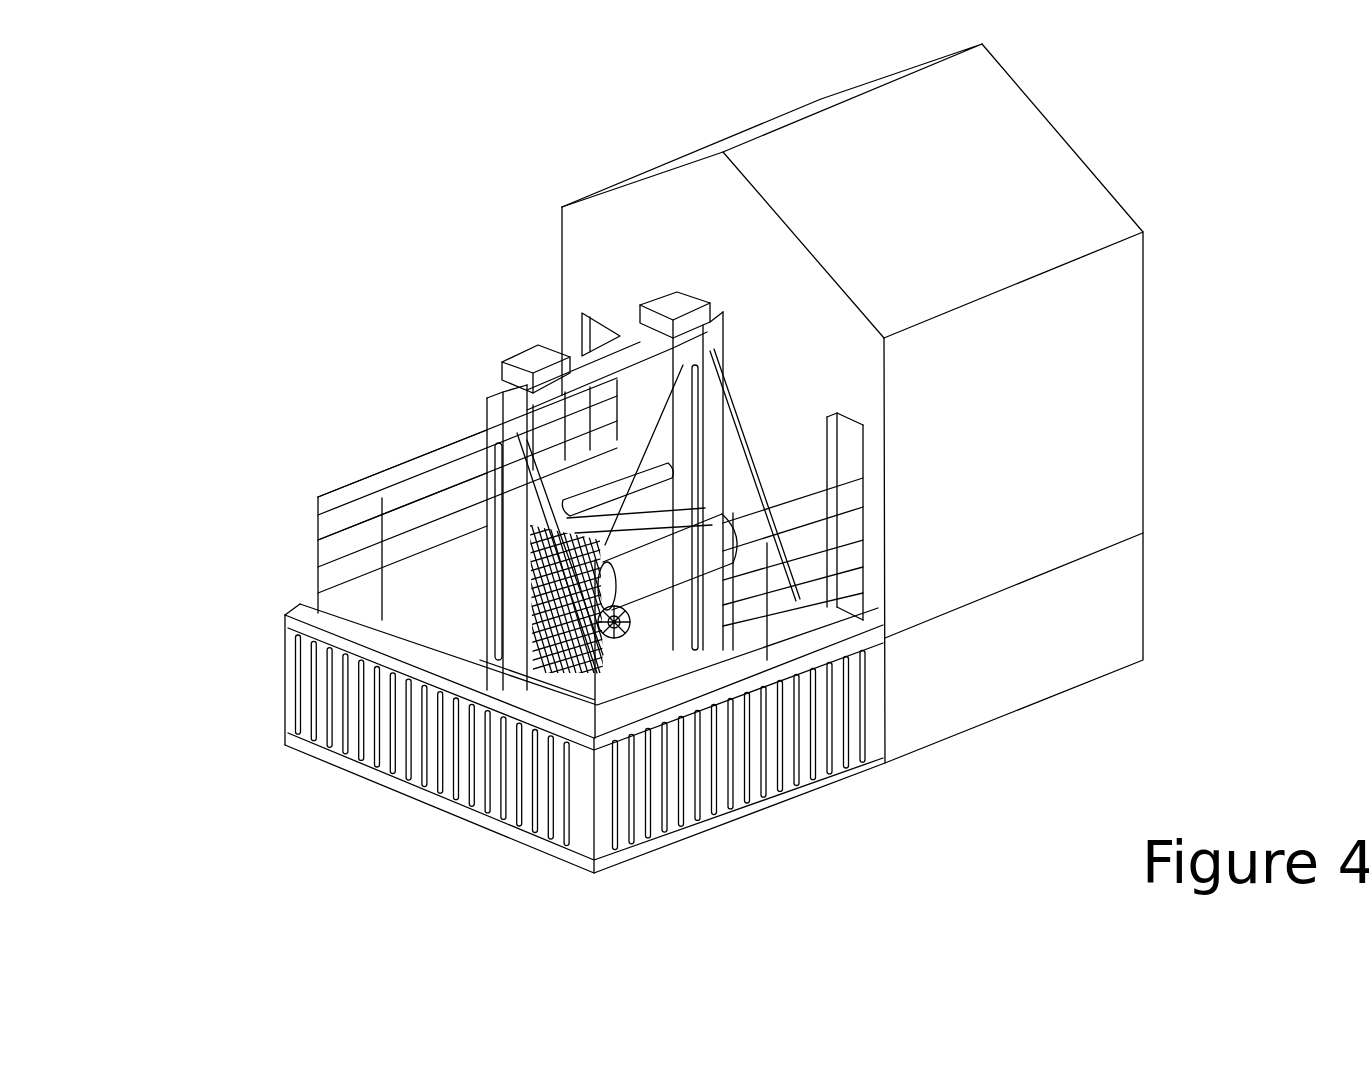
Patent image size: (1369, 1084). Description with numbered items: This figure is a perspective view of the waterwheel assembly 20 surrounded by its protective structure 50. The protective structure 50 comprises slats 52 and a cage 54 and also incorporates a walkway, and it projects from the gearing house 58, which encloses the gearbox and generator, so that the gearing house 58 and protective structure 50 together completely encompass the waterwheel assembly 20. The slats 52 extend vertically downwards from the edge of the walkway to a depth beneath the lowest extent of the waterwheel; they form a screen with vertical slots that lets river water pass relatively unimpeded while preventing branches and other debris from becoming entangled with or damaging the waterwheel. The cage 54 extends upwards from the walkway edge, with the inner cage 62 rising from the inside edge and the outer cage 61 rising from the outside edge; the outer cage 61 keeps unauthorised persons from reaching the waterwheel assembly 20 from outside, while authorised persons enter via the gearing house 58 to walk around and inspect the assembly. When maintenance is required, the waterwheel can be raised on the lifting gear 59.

The protective structure 50 is at (235, 343).
The slats 52 is at (412, 777).
The cage 54 is at (407, 430).
The gearing house 58 is at (1098, 387).
The lifting gear 59 is at (522, 362).
The outer cage 61 is at (313, 503).
The inner cage 62 is at (330, 535).
The waterwheel assembly 20 is at (730, 517).